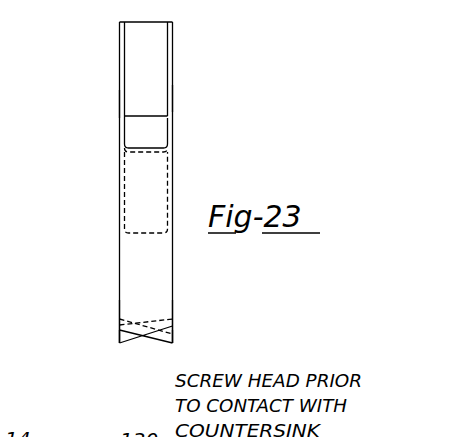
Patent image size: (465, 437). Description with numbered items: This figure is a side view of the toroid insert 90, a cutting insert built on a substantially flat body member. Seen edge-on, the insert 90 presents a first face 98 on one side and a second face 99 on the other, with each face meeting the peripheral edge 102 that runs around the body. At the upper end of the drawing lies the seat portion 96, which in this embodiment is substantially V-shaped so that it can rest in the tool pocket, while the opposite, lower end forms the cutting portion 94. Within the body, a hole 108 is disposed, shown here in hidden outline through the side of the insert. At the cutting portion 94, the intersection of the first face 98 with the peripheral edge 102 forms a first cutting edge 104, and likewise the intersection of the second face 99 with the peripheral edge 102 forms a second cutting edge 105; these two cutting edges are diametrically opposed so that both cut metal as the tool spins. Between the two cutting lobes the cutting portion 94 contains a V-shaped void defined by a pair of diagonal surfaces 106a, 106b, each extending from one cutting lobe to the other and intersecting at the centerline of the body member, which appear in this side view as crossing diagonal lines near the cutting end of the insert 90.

The toroid insert 90 is at (99, 342).
The cutting portion 94 is at (145, 322).
The seat portion 96 is at (133, 43).
The first face 98 is at (175, 99).
The second face 99 is at (117, 104).
The peripheral edge 102 is at (138, 70).
The first cutting edge 104 is at (172, 343).
The second cutting edge 105 is at (120, 343).
The diagonal surface 106a is at (160, 318).
The diagonal surface 106b is at (119, 319).
The hole 108 is at (139, 181).